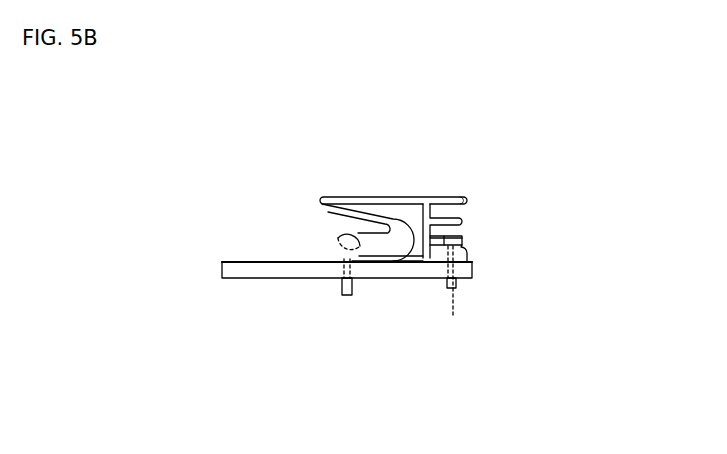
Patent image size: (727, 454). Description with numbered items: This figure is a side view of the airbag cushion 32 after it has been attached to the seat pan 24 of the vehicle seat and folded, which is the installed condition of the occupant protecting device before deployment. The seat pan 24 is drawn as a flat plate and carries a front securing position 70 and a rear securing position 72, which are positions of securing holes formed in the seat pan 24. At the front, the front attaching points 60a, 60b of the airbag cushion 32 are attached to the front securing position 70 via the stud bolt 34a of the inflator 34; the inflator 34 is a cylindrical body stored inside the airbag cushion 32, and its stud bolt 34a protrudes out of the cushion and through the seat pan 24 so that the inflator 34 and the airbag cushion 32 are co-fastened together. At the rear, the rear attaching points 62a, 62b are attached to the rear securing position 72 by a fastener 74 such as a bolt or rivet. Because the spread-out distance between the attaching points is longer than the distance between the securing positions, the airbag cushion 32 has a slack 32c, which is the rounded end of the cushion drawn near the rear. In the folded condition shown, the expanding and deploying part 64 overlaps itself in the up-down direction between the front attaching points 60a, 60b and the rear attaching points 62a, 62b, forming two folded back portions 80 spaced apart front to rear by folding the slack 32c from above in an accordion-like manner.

The seat pan 24 is at (222, 270).
The airbag cushion 32 is at (472, 165).
The slack 32c is at (458, 198).
The inflator 34 is at (323, 203).
The stud bolt 34a is at (344, 297).
The front attaching point 60a is at (332, 252).
The front attaching point 60b is at (349, 241).
The rear attaching point 62a is at (472, 250).
The rear attaching point 62b is at (446, 240).
The expanding and deploying part 64 is at (403, 202).
The front securing position 70 is at (340, 265).
The rear securing position 72 is at (458, 280).
The fastener 74 is at (457, 288).
The folded back portion 80 is at (411, 259).